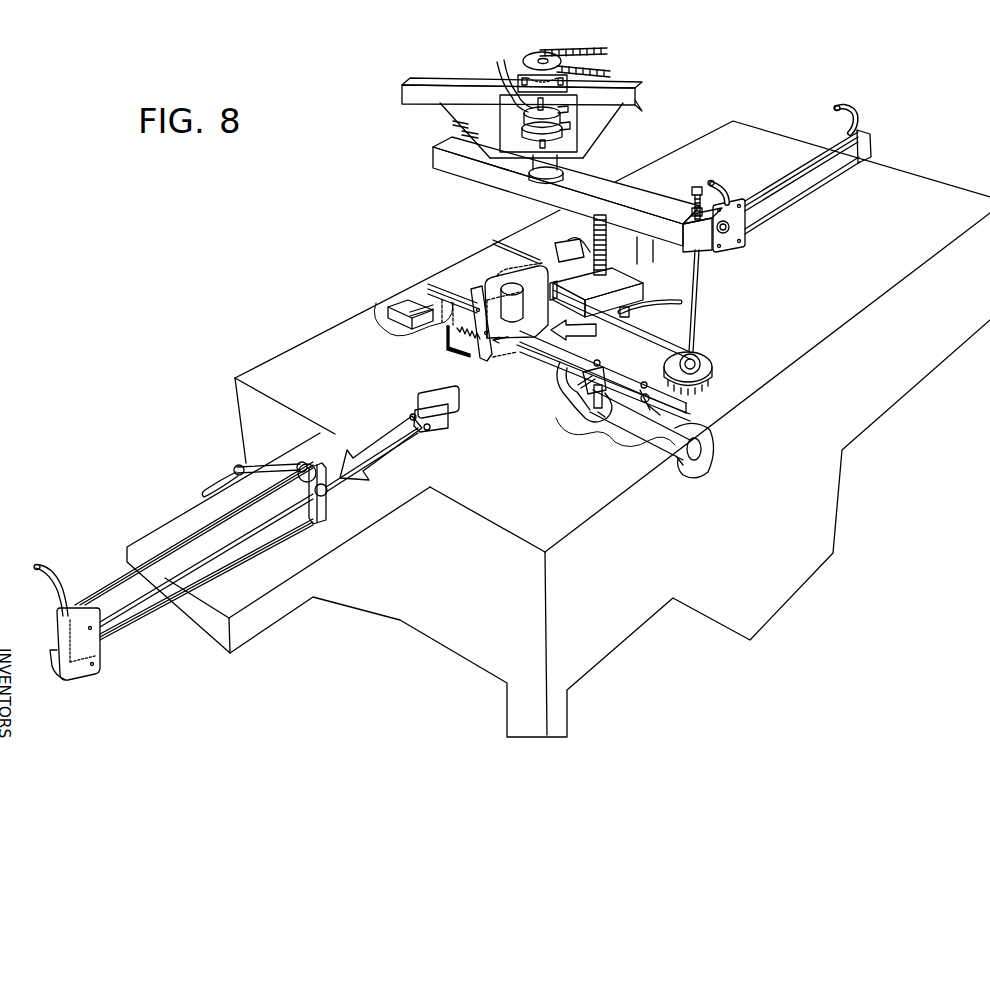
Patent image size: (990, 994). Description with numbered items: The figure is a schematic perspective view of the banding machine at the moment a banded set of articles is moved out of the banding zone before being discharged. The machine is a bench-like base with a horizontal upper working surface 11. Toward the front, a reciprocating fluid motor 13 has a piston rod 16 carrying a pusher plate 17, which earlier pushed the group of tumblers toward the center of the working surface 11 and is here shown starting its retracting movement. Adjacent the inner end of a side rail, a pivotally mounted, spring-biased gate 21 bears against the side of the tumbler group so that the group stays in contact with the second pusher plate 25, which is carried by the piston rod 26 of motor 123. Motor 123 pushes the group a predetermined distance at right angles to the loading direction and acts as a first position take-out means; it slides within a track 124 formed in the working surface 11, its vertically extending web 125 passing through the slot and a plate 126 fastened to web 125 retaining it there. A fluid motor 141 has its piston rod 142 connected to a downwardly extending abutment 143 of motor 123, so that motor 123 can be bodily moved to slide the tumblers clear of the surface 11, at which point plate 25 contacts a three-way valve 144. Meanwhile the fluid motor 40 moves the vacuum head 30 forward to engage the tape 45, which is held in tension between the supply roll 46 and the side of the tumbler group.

The horizontal upper working surface 11 is at (797, 345).
The fluid motor 13 is at (120, 627).
The piston rod 16 is at (341, 472).
The pusher plate 17 is at (450, 428).
The gate 21 is at (476, 298).
The second pusher plate 25 is at (510, 345).
The piston rod 26 is at (565, 378).
The vacuum head 30 is at (637, 293).
The fluid motor 40 is at (792, 190).
The tape 45 is at (648, 316).
The storage roll 46 is at (698, 352).
The motor 123 is at (606, 422).
The track 124 is at (712, 372).
The web 125 is at (624, 395).
The plate 126 is at (601, 365).
The fluid motor 141 is at (710, 433).
The piston rod 142 is at (592, 410).
The abutment 143 is at (588, 388).
The three-way valve 144 is at (410, 303).